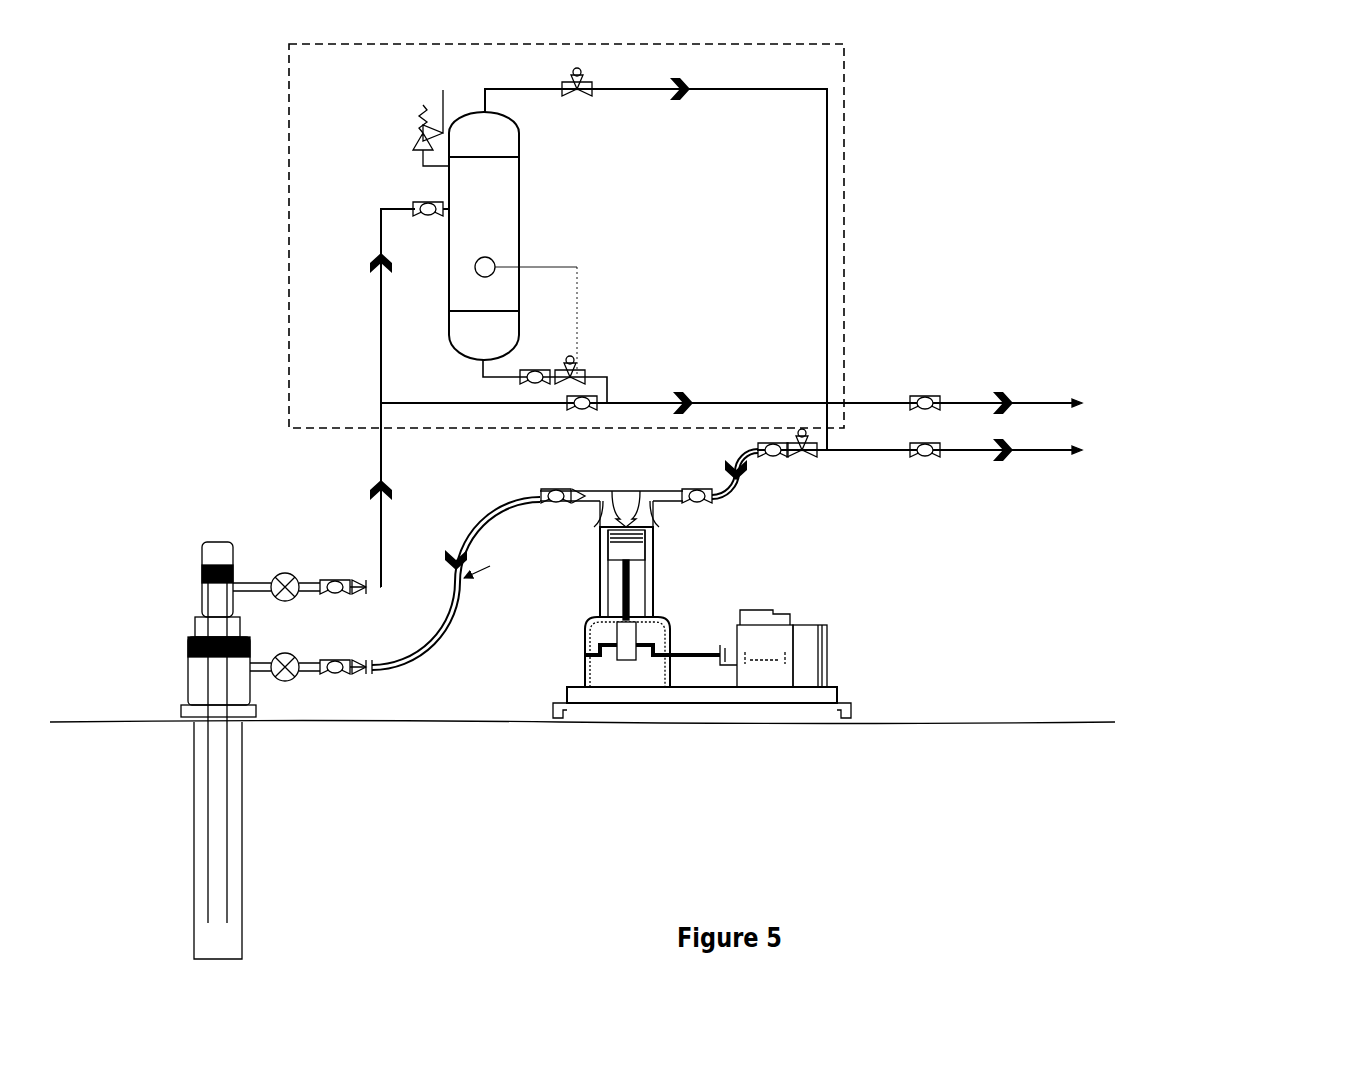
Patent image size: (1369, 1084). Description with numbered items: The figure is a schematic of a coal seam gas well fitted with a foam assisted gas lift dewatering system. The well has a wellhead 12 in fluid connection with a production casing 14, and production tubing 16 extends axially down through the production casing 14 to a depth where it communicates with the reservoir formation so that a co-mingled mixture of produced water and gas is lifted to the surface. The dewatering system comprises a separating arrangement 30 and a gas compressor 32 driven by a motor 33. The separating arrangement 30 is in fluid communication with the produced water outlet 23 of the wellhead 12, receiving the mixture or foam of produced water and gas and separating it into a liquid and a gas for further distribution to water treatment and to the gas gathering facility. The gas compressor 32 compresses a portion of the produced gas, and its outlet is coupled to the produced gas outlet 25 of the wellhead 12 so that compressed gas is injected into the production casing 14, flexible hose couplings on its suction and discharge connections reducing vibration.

The wellhead 12 is at (173, 650).
The production casing 14 is at (192, 807).
The production tubing 16 is at (205, 868).
The produced water outlet 23 is at (304, 567).
The produced gas outlet 25 is at (306, 688).
The separating arrangement 30 is at (847, 216).
The gas compressor 32 is at (669, 590).
The motor 33 is at (801, 617).